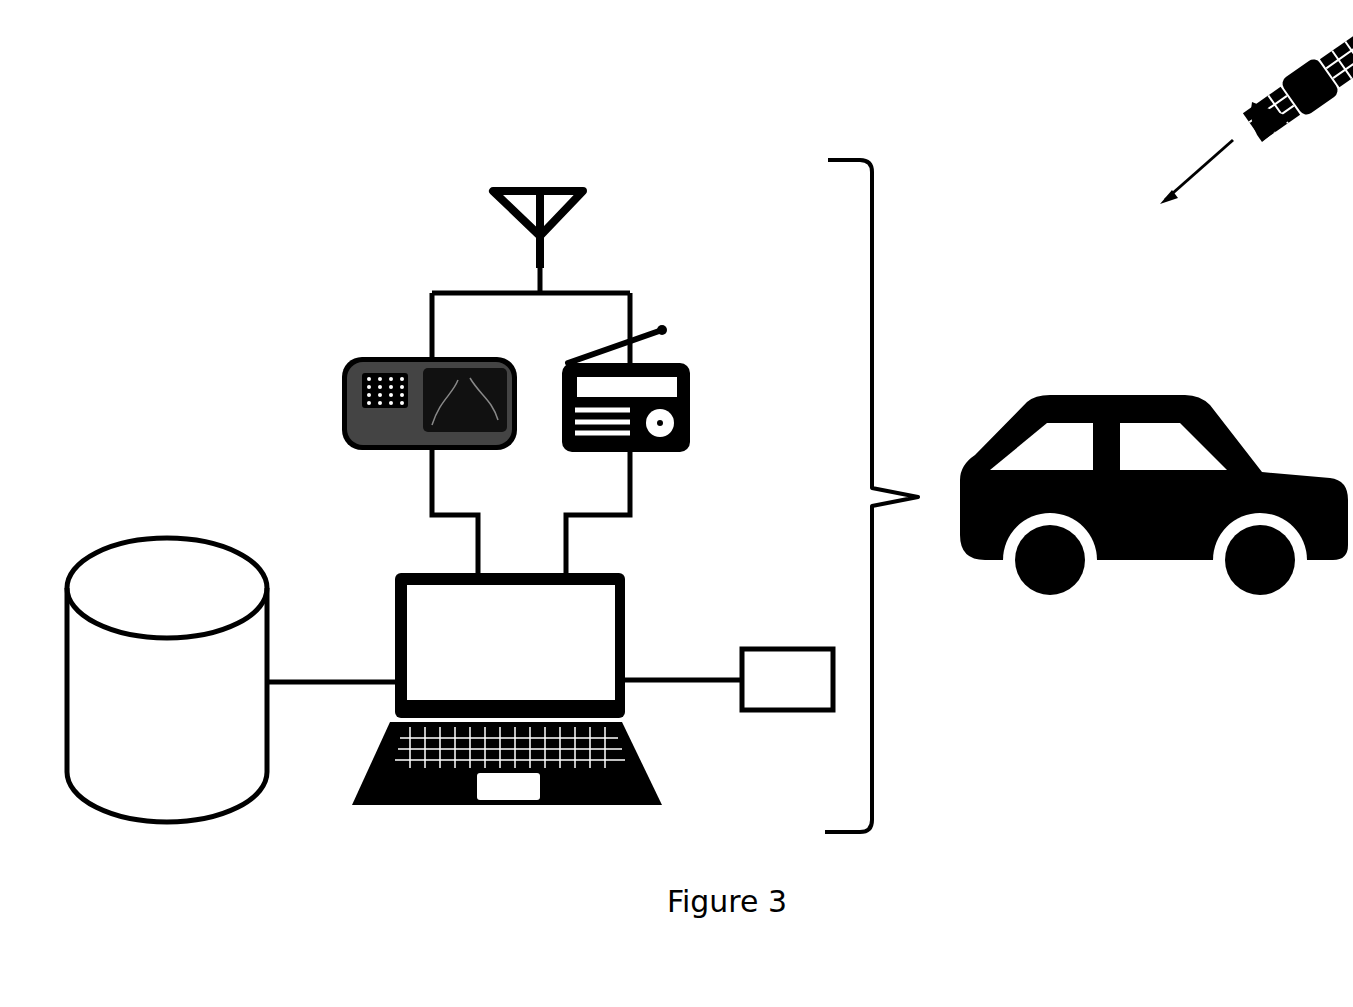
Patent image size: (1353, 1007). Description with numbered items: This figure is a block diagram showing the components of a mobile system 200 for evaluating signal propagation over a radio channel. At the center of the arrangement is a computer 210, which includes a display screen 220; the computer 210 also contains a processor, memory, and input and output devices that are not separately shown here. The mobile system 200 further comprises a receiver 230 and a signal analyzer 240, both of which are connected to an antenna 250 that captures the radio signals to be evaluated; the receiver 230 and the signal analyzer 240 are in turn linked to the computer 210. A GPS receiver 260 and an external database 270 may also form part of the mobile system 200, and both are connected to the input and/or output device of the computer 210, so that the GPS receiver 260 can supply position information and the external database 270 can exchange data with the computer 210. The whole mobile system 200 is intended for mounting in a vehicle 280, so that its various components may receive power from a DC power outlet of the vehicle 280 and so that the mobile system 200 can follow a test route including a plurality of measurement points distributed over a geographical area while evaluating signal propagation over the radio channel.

The mobile system 200 is at (740, 118).
The computer 210 is at (656, 606).
The display screen 220 is at (545, 661).
The receiver 230 is at (693, 388).
The signal analyzer 240 is at (343, 393).
The antenna 250 is at (575, 205).
The GPS receiver 260 is at (745, 645).
The external database 270 is at (268, 623).
The vehicle 280 is at (1000, 430).